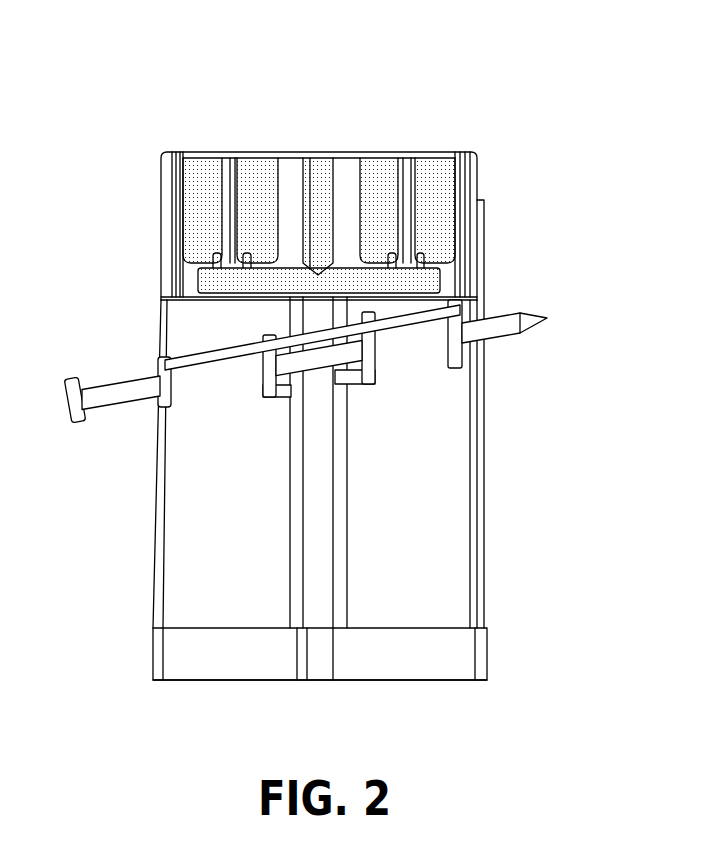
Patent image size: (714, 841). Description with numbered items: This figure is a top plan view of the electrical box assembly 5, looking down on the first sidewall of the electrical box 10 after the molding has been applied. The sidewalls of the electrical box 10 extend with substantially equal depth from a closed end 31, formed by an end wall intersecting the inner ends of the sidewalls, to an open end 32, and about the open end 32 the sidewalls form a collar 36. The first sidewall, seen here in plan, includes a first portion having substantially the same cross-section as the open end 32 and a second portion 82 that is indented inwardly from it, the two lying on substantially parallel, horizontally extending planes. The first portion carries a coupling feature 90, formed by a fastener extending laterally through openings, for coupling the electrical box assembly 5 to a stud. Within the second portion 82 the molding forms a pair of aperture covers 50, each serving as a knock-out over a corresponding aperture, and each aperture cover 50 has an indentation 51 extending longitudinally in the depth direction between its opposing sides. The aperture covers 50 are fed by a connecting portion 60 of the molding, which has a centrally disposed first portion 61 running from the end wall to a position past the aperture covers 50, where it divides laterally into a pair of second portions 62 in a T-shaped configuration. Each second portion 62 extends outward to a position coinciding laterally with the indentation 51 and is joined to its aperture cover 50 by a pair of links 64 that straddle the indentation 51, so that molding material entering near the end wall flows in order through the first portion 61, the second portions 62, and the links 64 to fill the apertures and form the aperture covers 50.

The electrical box assembly 5 is at (103, 78).
The electrical box 10 is at (489, 470).
The closed end 31 is at (332, 157).
The open end 32 is at (201, 683).
The collar 36 is at (492, 650).
The aperture cover 50 is at (200, 165).
The indentation 51 is at (228, 165).
The connecting portion 60 is at (340, 258).
The first portion 61 is at (310, 155).
The second portions 62 is at (198, 273).
The links 64 is at (243, 260).
The second portion 82 is at (288, 165).
The coupling feature 90 is at (113, 385).